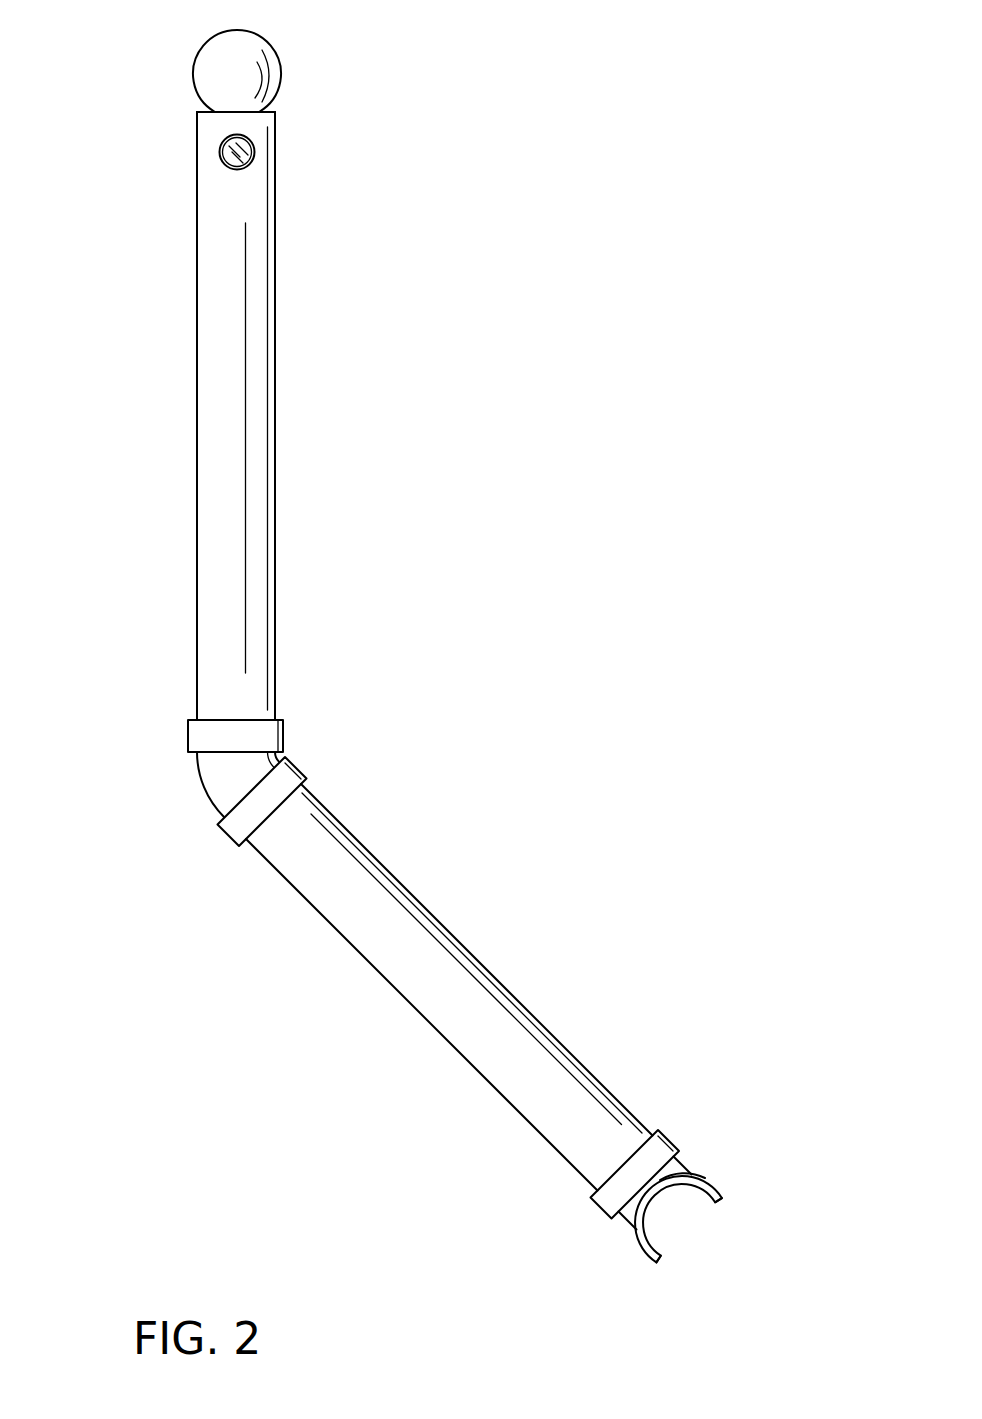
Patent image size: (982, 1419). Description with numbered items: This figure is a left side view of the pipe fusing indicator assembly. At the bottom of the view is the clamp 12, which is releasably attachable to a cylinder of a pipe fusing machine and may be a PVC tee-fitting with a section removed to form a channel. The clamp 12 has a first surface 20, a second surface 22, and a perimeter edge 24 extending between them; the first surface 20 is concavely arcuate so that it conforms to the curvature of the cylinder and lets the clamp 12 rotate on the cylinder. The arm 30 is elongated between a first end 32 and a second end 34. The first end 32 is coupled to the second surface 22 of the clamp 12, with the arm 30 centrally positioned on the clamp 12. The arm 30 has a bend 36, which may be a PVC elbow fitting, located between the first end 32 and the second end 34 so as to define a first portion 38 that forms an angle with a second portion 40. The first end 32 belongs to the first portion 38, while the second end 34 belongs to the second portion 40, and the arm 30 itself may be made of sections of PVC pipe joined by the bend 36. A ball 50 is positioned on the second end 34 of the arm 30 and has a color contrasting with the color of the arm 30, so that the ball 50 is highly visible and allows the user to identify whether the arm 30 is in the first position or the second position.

The clamp 12 is at (715, 1183).
The first surface 20 is at (660, 1246).
The second surface 22 is at (695, 1178).
The perimeter edge 24 is at (724, 1201).
The arm 30 is at (197, 607).
The first end 32 is at (650, 1183).
The second end 34 is at (223, 112).
The bend 36 is at (203, 784).
The first portion 38 is at (418, 1027).
The second portion 40 is at (187, 463).
The ball 50 is at (272, 54).